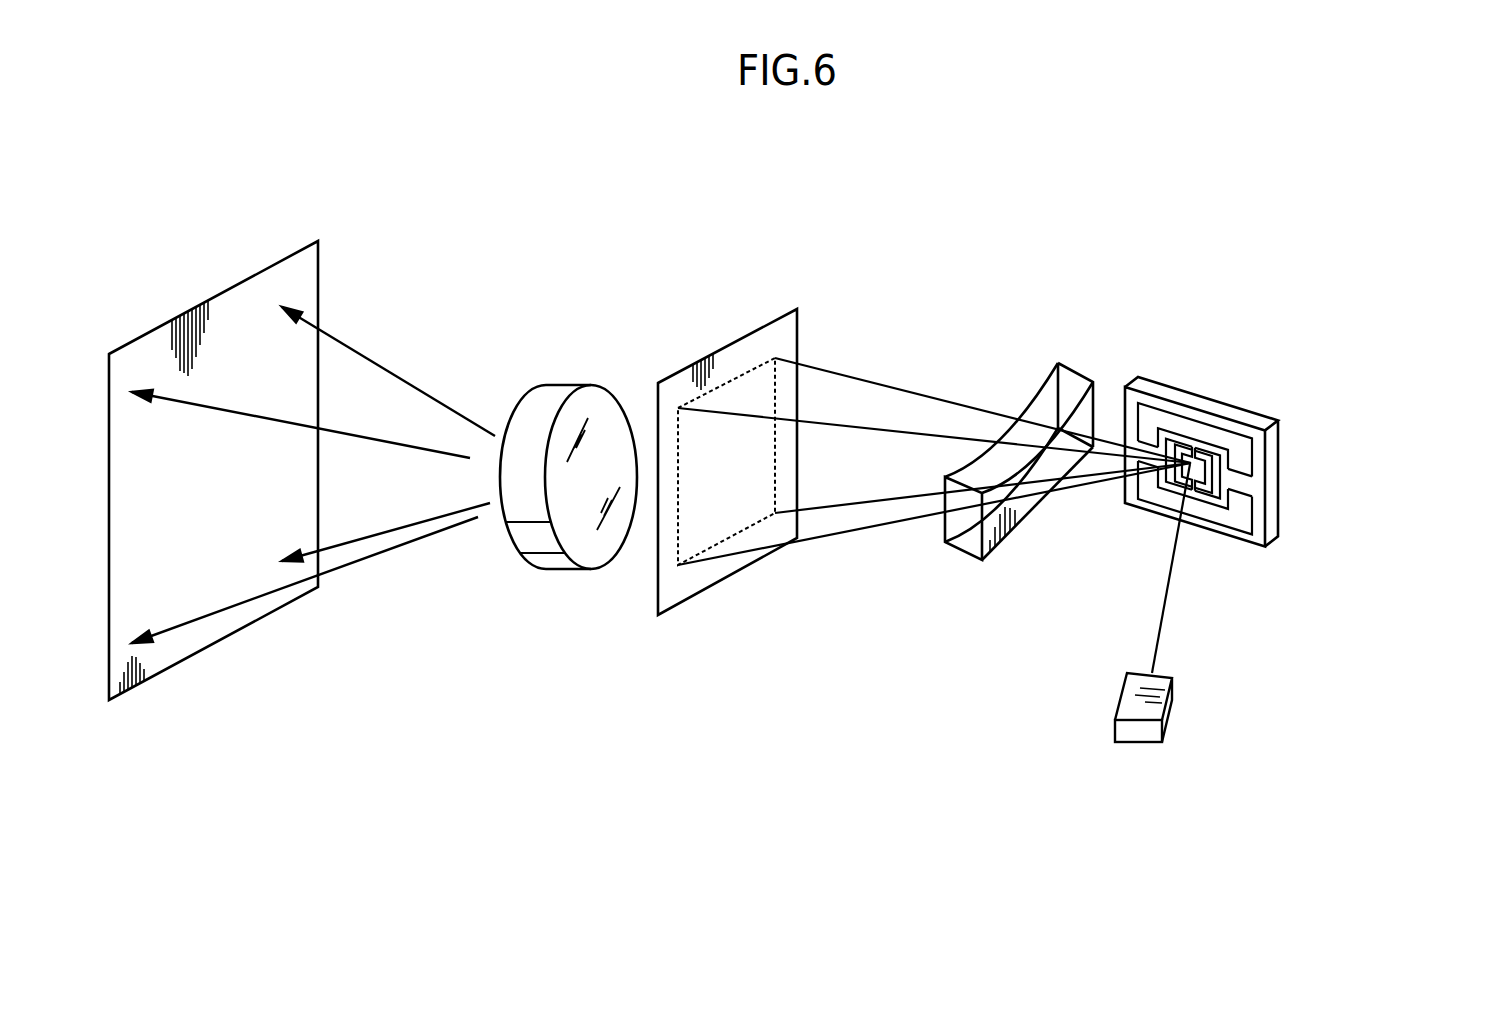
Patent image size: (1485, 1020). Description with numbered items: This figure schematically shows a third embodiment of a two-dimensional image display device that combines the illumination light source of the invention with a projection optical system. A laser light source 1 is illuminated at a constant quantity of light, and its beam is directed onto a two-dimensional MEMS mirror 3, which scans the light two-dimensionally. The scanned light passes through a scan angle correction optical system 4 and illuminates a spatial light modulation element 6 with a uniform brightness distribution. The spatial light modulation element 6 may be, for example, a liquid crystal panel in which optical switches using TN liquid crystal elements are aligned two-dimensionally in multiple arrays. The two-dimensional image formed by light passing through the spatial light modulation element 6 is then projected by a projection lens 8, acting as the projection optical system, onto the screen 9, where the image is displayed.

The laser light source 1 is at (1133, 744).
The 2-D MEMS mirror 3 is at (1238, 375).
The scan angle correction optical system 4 is at (1072, 378).
The spatial light modulation element 6 is at (776, 338).
The projection lens 8 is at (549, 392).
The screen 9 is at (267, 282).